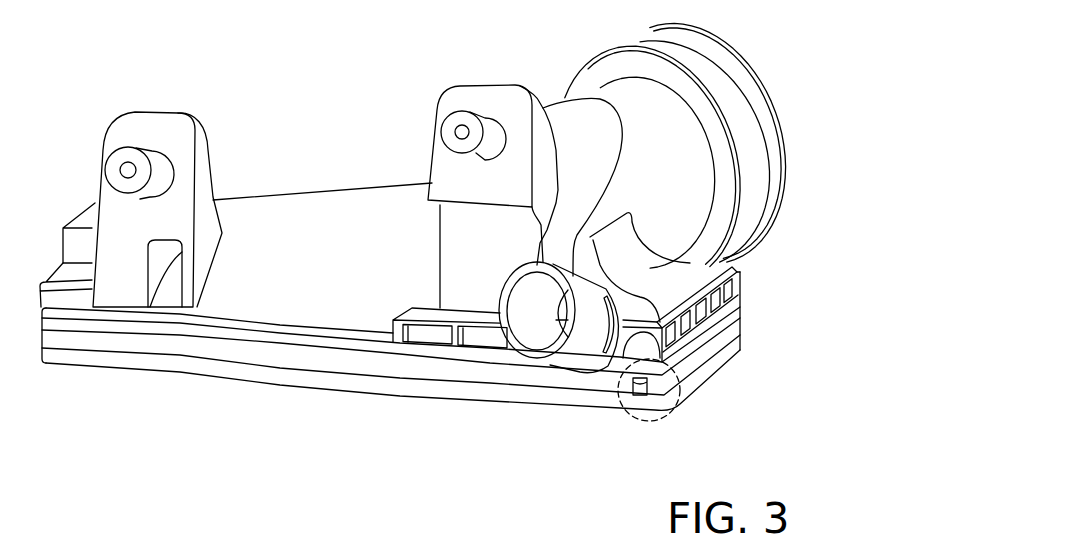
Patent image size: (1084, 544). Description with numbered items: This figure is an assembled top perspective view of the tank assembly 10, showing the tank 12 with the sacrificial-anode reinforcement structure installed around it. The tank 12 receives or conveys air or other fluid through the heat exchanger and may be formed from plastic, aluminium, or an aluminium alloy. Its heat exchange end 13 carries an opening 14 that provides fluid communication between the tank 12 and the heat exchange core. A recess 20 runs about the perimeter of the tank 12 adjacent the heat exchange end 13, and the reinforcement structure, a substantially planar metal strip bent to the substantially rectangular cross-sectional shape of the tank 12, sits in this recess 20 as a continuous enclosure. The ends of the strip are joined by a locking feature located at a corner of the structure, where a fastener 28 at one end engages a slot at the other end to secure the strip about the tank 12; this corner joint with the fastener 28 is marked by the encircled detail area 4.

The tank assembly 10 is at (124, 50).
The tank 12 is at (343, 207).
The heat exchange end 13 is at (77, 372).
The opening 14 is at (305, 393).
The recess 20 is at (733, 327).
The detail region 4 is at (678, 384).
The fastener 28 is at (636, 408).